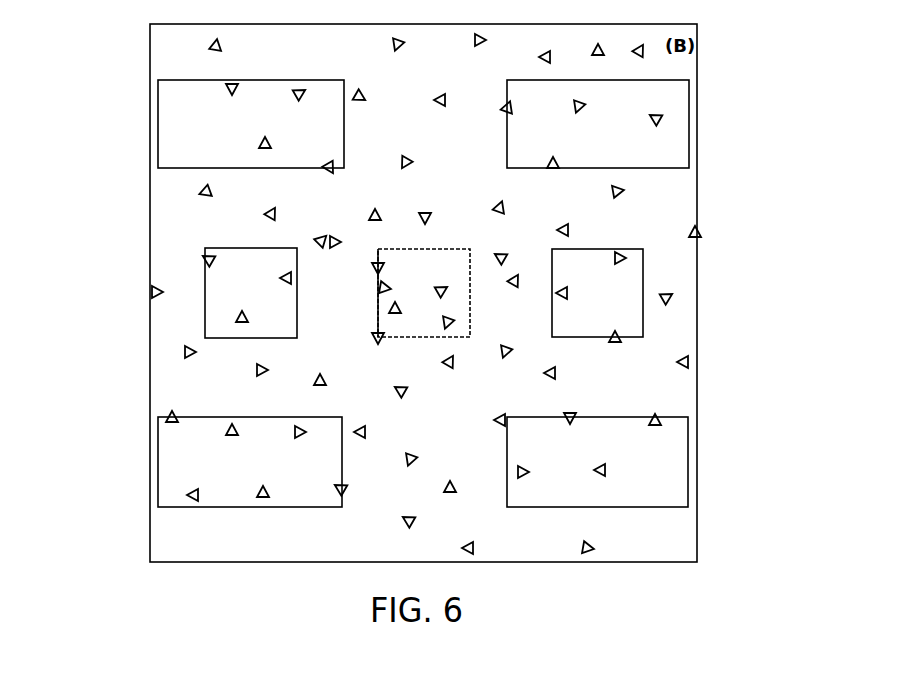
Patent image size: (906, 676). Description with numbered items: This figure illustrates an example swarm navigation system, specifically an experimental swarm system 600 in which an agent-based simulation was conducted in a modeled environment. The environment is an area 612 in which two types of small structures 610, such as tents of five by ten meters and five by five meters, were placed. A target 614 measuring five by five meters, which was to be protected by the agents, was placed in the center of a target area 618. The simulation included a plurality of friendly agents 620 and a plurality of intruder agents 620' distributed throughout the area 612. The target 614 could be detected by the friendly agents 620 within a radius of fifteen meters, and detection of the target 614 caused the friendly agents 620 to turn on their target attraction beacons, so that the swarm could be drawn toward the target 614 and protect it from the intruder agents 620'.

The swarm system 600 is at (766, 149).
The small structures 610 is at (160, 131).
The area 612 is at (673, 536).
The target 614 is at (423, 295).
The target area 618 is at (378, 310).
The friendly agents 620 is at (426, 294).
The intruder agents 620' is at (458, 291).